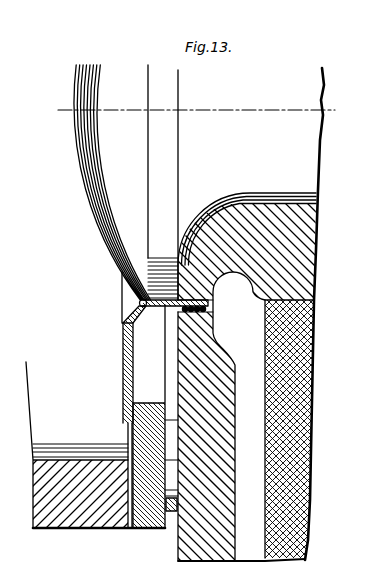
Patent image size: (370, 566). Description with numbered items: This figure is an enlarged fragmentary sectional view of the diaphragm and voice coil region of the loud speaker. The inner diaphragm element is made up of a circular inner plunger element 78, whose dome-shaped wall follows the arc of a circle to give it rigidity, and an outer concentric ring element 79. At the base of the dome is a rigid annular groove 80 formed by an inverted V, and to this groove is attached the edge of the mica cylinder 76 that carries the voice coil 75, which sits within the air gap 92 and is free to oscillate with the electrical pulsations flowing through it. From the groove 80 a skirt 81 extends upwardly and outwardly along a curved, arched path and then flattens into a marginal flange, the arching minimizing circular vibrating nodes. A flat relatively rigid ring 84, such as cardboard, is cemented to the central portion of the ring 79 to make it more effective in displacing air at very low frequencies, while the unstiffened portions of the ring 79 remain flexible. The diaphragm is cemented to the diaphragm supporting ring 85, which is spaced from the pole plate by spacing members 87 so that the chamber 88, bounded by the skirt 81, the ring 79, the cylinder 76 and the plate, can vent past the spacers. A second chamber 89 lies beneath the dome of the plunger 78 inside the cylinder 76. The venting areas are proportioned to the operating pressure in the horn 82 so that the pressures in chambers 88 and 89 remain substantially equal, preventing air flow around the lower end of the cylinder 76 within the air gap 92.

The voice coil 75 is at (214, 316).
The mica cylinder 76 is at (170, 309).
The inner plunger element 78 is at (100, 213).
The outer concentric ring element 79 is at (127, 432).
The groove 80 is at (143, 303).
The skirt 81 is at (125, 325).
The horn 82 is at (57, 515).
The flat relatively rigid ring 84 is at (123, 392).
The diaphragm supporting ring 85 is at (145, 517).
The spacing members 87 is at (172, 513).
The chamber 88 is at (128, 446).
The chamber 89 is at (97, 153).
The air gap 92 is at (209, 303).